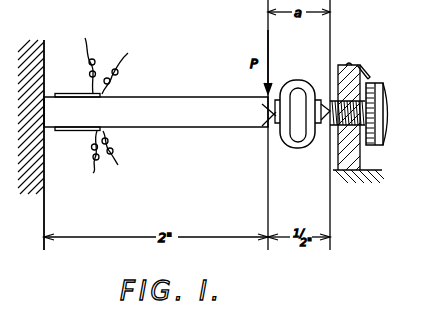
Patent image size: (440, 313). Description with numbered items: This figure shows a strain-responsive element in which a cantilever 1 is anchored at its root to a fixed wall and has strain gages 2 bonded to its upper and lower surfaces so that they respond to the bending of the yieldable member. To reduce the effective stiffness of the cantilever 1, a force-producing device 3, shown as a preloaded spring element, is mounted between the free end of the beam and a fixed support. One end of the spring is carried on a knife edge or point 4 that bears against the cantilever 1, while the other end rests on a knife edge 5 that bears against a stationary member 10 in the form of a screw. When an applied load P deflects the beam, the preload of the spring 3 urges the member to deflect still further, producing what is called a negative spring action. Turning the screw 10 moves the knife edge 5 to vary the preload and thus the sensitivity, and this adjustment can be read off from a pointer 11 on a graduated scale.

The cantilever 1 is at (185, 128).
The strain gages 2 is at (67, 93).
The force-producing device 3 is at (298, 149).
The knife edge or point 4 is at (268, 112).
The knife edge 5 is at (331, 104).
The stationary member 10 is at (360, 113).
The pointer 11 is at (364, 71).